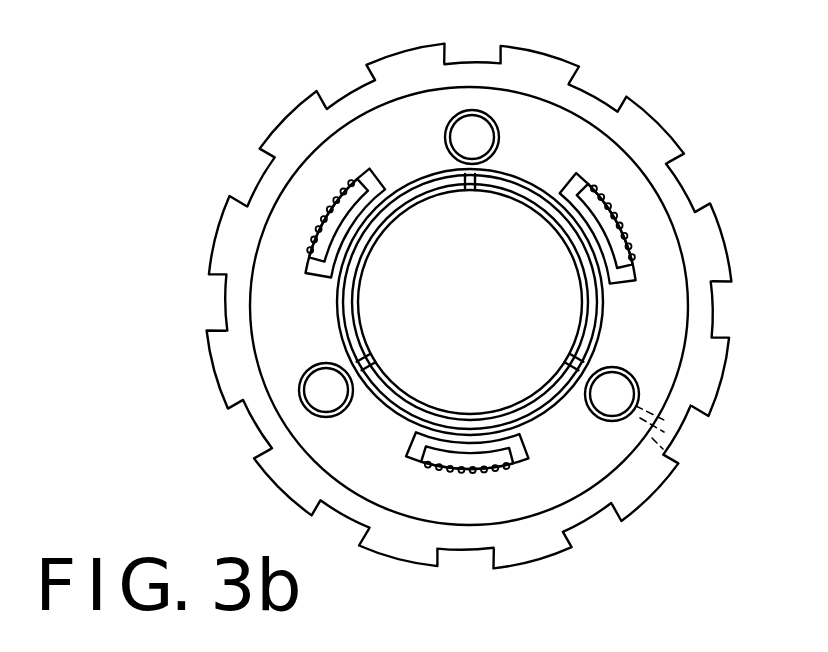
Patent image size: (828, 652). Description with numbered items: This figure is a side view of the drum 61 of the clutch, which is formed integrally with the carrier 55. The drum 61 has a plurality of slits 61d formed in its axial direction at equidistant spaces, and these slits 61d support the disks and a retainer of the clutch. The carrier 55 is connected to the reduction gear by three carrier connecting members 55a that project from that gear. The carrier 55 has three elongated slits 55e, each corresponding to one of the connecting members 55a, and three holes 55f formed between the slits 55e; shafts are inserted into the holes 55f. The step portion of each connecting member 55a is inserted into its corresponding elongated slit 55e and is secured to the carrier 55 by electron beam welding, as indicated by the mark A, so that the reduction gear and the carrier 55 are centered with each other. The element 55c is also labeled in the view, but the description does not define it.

The drum 61 is at (653, 125).
The slits 61d is at (696, 204).
The carrier 55 is at (662, 297).
The carrier connecting members 55a is at (588, 197).
The locking tab 55c is at (578, 375).
The elongated slits 55e is at (632, 284).
The holes 55f is at (620, 390).
The mark A is at (632, 242).